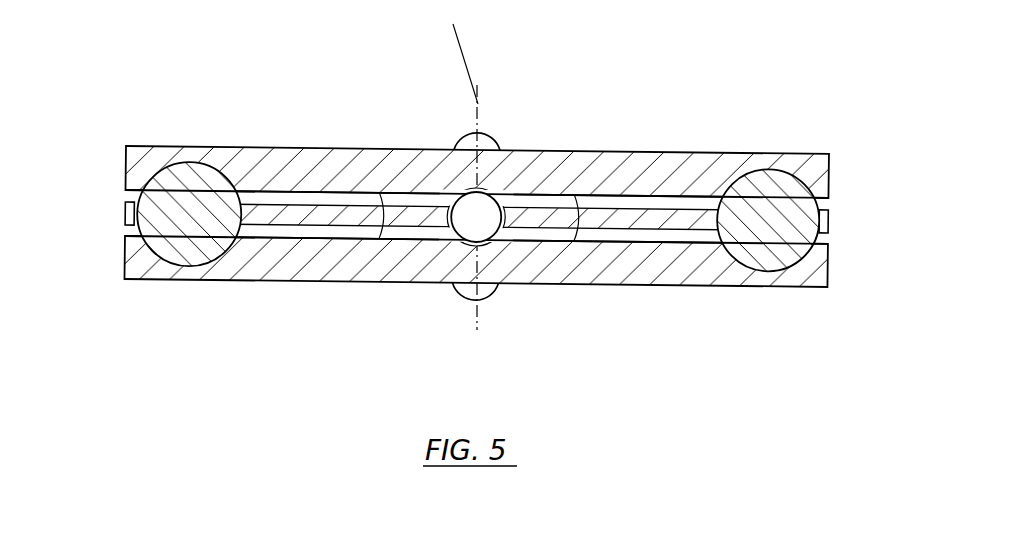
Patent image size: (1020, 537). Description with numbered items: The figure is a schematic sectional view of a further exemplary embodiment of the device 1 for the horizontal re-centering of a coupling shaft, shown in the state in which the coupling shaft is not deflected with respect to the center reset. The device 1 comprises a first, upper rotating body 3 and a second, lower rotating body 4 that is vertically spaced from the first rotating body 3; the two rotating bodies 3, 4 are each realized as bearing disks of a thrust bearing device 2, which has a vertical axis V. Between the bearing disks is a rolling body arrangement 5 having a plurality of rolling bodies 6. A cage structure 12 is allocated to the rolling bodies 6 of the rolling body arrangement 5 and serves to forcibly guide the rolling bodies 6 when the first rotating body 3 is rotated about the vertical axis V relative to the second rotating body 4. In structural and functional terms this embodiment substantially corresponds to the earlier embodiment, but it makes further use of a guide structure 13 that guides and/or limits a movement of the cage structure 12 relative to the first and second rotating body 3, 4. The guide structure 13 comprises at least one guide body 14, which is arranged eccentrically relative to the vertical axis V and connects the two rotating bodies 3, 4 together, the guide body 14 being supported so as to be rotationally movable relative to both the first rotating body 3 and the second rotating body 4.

The device 1 is at (150, 71).
The thrust bearing device 2 is at (60, 153).
The first rotating body 3 is at (704, 158).
The second rotating body 4 is at (658, 262).
The rolling body arrangement 5 is at (110, 179).
The rolling body 6 is at (752, 190).
The cage structure 12 is at (829, 219).
The guide structure 13 is at (467, 230).
The guide body 14 is at (476, 217).